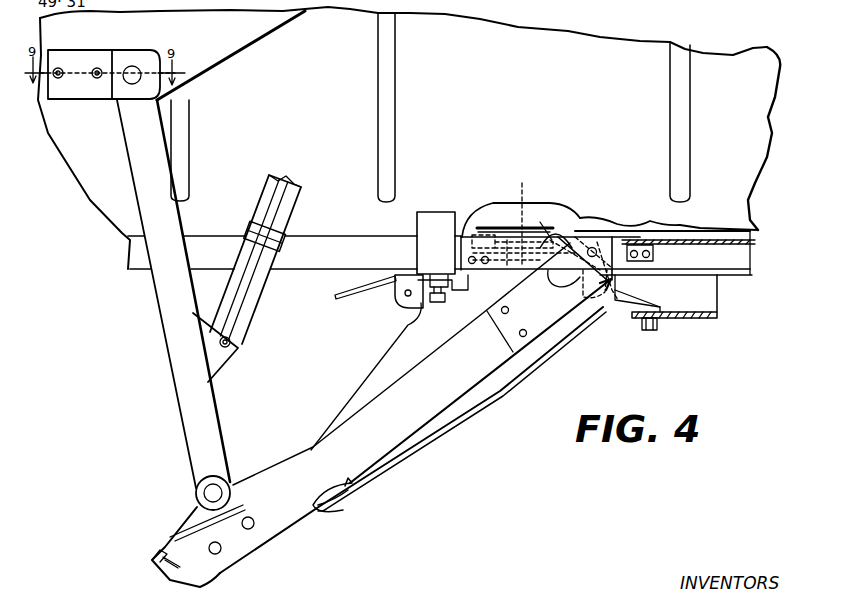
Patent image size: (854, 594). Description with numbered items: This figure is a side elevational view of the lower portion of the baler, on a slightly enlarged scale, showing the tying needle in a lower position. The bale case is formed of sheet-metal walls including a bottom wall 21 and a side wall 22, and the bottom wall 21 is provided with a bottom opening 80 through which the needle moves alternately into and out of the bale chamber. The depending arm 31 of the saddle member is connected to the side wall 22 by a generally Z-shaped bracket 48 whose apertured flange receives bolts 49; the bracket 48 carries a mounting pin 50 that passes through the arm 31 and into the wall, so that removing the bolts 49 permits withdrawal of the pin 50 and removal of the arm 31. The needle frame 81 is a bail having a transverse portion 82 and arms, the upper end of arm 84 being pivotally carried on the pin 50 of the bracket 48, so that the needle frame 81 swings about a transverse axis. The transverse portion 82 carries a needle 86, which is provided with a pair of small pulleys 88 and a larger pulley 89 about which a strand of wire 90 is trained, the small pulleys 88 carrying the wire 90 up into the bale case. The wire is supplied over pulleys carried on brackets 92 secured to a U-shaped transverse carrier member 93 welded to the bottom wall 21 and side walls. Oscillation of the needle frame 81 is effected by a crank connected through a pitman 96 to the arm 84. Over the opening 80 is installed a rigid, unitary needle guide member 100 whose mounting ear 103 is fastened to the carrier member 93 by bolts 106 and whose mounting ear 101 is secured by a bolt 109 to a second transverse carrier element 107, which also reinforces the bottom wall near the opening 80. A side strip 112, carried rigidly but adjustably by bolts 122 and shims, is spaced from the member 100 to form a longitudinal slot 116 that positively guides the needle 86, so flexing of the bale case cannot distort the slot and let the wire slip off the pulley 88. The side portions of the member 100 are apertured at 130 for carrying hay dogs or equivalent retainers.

The side wall 22 is at (583, 57).
The bracket 48 is at (85, 57).
The bolts 49 is at (97, 80).
The mounting pin 50 is at (127, 67).
The depending arm 31 is at (246, 42).
The bottom wall 21 is at (755, 255).
The bottom opening 80 is at (620, 230).
The needle frame 81 is at (171, 294).
The needle frame arm 84 is at (177, 350).
The transverse portion 82 is at (213, 493).
The pitman 96 is at (257, 295).
The transverse carrier member 93 is at (452, 198).
The mounting ear 103 is at (420, 268).
The brackets 92 is at (402, 300).
The bolts 106 is at (437, 303).
The needle guide member 100 is at (533, 284).
The strip 112 is at (481, 242).
The longitudinal slot 116 is at (522, 216).
The small pulleys 88 is at (550, 222).
The apertures 130 is at (593, 246).
The bolts 122 is at (485, 266).
The mounting ear 101 is at (620, 302).
The second transverse carrier element 107 is at (717, 318).
The bolt 109 is at (650, 331).
The needle 86 is at (310, 462).
The wire 90 is at (459, 423).
The larger pulley 89 is at (340, 500).